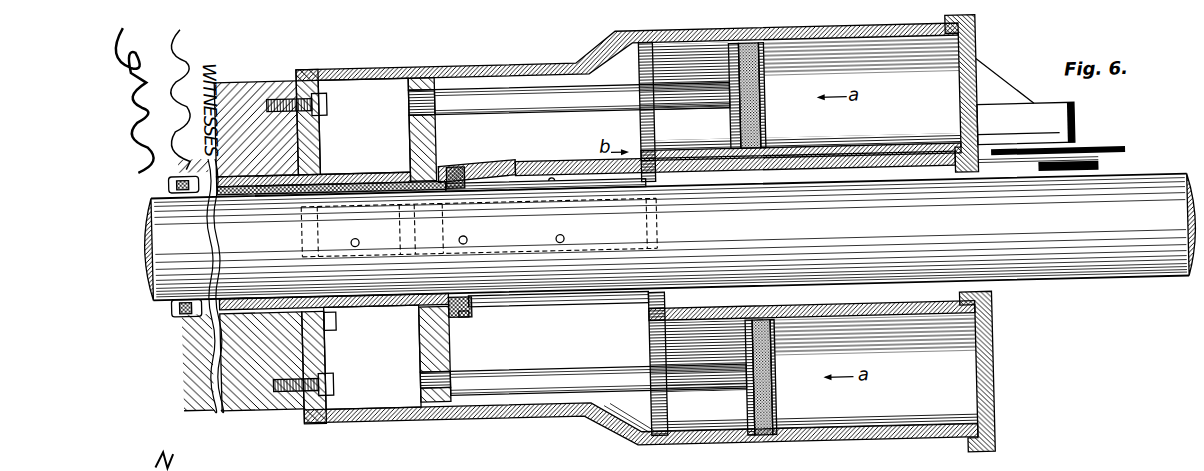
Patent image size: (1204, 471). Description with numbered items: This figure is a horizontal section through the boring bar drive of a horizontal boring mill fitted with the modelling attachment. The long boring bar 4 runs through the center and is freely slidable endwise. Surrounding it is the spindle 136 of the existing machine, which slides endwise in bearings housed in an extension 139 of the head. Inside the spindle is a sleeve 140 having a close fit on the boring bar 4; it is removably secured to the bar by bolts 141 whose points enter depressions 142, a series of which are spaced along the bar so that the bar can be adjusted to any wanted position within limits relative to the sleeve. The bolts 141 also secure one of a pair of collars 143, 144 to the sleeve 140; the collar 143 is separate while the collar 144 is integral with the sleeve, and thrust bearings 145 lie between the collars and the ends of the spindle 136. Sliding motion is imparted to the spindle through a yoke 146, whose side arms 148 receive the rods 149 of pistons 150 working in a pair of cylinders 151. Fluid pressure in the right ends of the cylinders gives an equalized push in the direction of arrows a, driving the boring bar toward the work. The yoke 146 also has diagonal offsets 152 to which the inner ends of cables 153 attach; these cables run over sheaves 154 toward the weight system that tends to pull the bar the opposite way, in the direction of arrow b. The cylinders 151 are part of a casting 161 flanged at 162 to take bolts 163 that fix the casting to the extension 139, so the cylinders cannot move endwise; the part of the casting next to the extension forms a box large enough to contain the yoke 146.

The boring bar 4 is at (1078, 288).
The spindle 136 is at (347, 299).
The extension 139 is at (280, 393).
The sleeve 140 is at (386, 303).
The bolts 141 is at (467, 163).
The depressions 142 is at (467, 235).
The collar 143 is at (470, 298).
The collar 144 is at (182, 302).
The thrust bearings 145 is at (187, 308).
The yoke 146 is at (422, 352).
The side arms 148 is at (432, 76).
The rods 149 is at (530, 92).
The pistons 150 is at (768, 120).
The cylinders 151 is at (981, 38).
The diagonal offsets 152 is at (405, 141).
The cables 153 is at (557, 158).
The sheaves 154 is at (1097, 157).
The casting 161 is at (372, 61).
The flange 162 is at (300, 71).
The bolts 163 is at (322, 85).